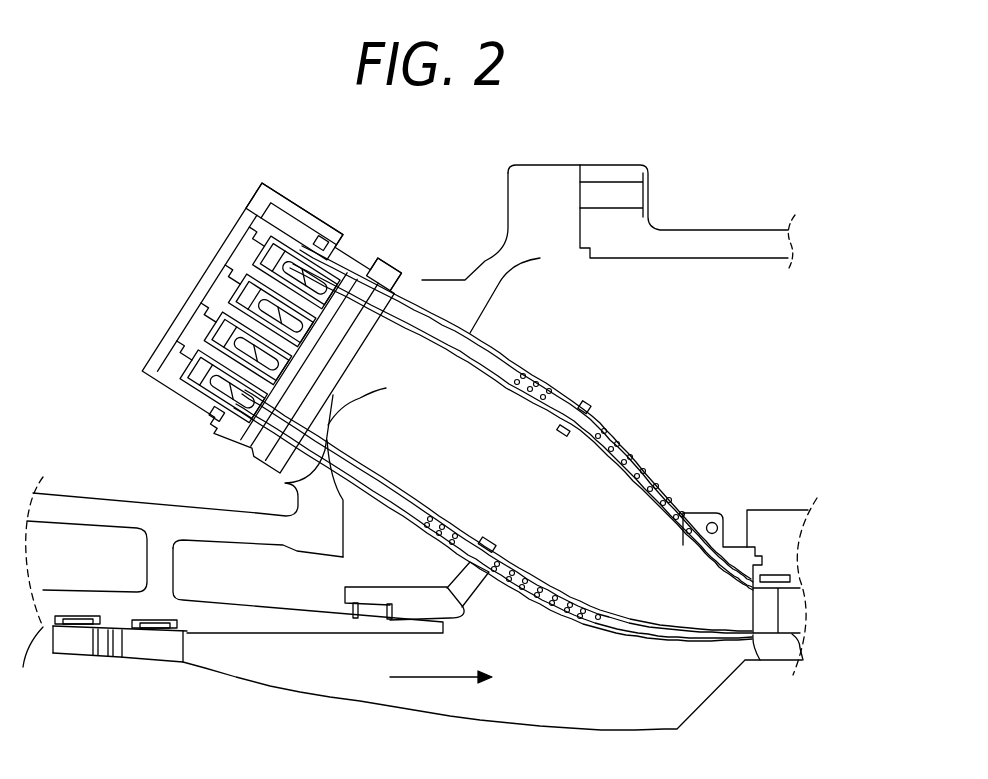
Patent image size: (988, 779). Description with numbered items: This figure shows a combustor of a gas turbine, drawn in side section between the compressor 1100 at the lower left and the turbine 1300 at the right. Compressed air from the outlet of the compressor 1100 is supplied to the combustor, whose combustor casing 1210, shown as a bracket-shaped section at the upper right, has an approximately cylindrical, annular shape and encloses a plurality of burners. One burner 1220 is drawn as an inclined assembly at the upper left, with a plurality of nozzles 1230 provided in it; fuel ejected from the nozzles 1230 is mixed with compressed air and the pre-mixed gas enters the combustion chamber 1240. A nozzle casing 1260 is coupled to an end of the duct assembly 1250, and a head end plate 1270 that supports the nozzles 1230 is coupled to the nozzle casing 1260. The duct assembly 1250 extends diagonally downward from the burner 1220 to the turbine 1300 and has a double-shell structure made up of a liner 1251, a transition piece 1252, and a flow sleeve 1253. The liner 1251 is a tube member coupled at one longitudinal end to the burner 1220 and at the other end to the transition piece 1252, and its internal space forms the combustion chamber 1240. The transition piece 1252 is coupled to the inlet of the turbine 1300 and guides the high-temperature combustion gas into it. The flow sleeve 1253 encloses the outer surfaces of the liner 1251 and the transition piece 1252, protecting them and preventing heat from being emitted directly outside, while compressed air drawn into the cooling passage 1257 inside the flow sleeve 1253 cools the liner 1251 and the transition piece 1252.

The compressor 1100 is at (72, 657).
The combustor casing 1210 is at (700, 219).
The burner 1220 is at (227, 274).
The nozzle 1230 is at (343, 312).
The combustion chamber 1240 is at (285, 482).
The duct assembly 1250 is at (654, 340).
The liner 1251 is at (502, 370).
The transition piece 1252 is at (586, 422).
The flow sleeve 1253 is at (552, 390).
The cooling passage 1257 is at (432, 322).
The nozzle casing 1260 is at (296, 216).
The head end plate 1270 is at (248, 229).
The turbine 1300 is at (785, 613).